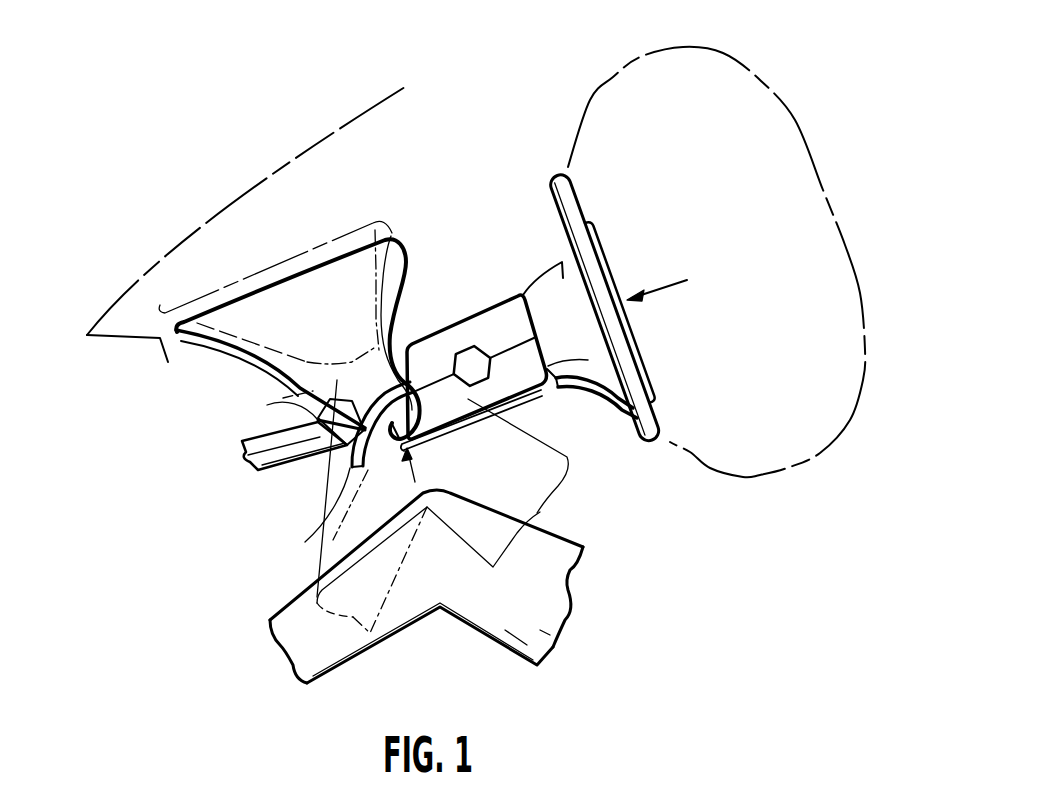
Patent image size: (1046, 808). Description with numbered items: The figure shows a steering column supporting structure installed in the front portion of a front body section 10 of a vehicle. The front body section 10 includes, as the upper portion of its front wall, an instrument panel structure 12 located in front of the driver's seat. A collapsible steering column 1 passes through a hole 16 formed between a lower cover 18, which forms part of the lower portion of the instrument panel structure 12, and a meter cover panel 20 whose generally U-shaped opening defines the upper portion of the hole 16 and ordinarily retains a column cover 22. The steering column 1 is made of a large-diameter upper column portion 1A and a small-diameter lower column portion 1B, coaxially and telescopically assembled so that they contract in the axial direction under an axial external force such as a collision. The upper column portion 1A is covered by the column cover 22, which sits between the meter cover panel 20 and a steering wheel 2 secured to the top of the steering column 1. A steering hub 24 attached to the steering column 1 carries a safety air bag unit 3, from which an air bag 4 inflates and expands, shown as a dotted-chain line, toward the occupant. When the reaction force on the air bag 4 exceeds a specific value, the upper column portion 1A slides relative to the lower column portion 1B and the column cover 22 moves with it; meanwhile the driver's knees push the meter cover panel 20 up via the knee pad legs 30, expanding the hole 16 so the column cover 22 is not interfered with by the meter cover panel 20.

The steering column 1 is at (297, 539).
The upper column portion 1A is at (300, 458).
The lower column portion 1B is at (253, 465).
The steering wheel 2 is at (558, 181).
The safety air bag unit 3 is at (603, 240).
The air bag 4 is at (618, 67).
The front body section 10 is at (480, 194).
The instrument panel structure 12 is at (168, 362).
The hole 16 is at (397, 343).
The lower cover 18 is at (358, 472).
The meter cover panel 20 is at (333, 227).
The column cover 22 is at (500, 315).
The steering hub 24 is at (562, 270).
The knee pad legs 30 is at (308, 418).